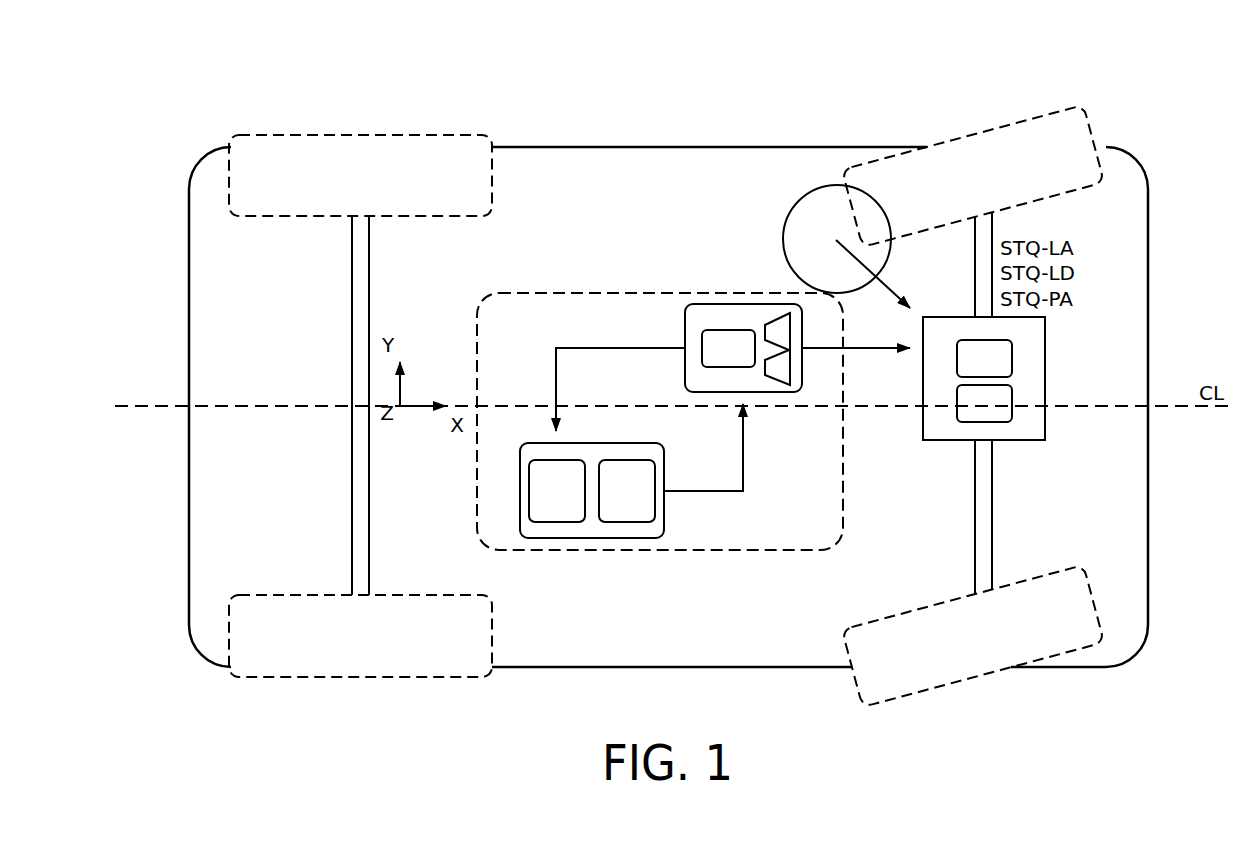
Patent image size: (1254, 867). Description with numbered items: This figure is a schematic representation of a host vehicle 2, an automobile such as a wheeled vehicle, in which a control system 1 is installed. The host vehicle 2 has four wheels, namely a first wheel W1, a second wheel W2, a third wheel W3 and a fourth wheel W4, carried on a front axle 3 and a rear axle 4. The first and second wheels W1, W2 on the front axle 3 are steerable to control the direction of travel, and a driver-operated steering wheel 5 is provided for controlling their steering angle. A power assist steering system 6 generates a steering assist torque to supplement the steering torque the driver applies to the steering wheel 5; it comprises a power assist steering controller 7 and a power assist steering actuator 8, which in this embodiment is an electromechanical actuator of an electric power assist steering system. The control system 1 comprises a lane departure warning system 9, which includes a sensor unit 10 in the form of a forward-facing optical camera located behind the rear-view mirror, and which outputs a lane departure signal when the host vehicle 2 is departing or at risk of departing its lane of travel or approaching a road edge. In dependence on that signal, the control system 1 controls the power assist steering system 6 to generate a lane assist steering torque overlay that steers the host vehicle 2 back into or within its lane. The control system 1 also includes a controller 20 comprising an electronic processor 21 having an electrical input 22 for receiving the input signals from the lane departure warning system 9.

The control system 1 is at (584, 565).
The host vehicle 2 is at (458, 98).
The front axle 3 is at (1004, 490).
The rear axle 4 is at (338, 313).
The steering wheel 5 is at (778, 205).
The power assist steering system 6 is at (1014, 378).
The power assist steering controller 7 is at (984, 358).
The power assist steering actuator 8 is at (984, 403).
The lane departure warning system 9 is at (706, 321).
The sensor unit 10 is at (781, 316).
The controller 20 is at (631, 492).
The electronic processor 21 is at (557, 491).
The electrical input 22 is at (627, 491).
The first wheel W1 is at (998, 115).
The second wheel W2 is at (964, 692).
The third wheel W3 is at (301, 121).
The fourth wheel W4 is at (296, 690).